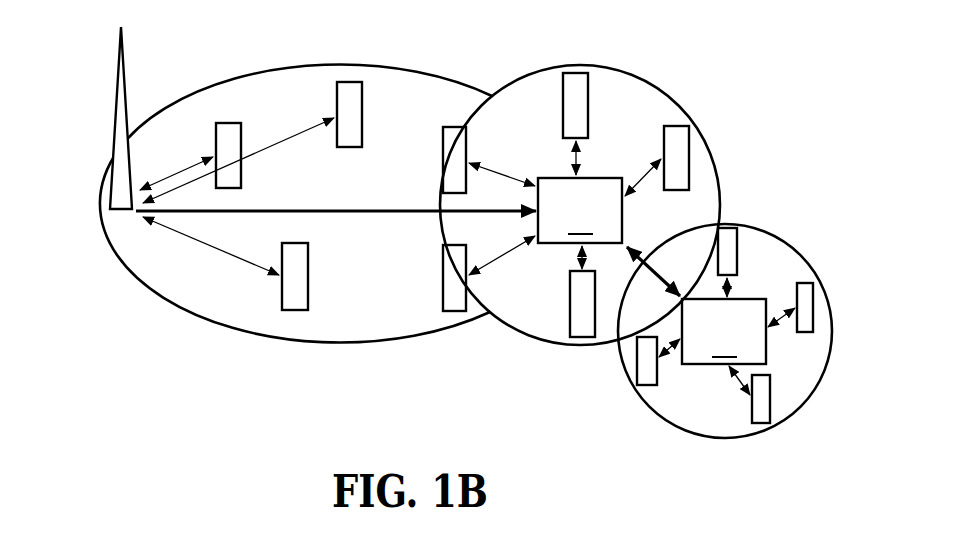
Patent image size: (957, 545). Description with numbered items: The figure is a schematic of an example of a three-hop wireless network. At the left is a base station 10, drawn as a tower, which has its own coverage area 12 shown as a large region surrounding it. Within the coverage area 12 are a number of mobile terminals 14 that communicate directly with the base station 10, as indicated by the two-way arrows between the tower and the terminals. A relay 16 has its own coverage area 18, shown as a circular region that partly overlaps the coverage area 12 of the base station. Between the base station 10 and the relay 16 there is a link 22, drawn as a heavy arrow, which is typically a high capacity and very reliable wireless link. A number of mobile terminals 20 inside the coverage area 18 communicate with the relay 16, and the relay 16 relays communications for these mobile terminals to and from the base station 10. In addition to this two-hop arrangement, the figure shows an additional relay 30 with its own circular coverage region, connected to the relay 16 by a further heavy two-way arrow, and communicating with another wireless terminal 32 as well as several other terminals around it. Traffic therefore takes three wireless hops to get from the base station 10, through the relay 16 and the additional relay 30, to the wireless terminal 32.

The base station 10 is at (113, 128).
The coverage area 12 is at (265, 73).
The mobile terminals 14 is at (362, 93).
The relay 16 is at (580, 210).
The coverage area 18 is at (660, 92).
The mobile terminals 20 is at (592, 100).
The link 22 is at (370, 207).
The additional relay 30 is at (724, 331).
The wireless terminal 32 is at (812, 300).